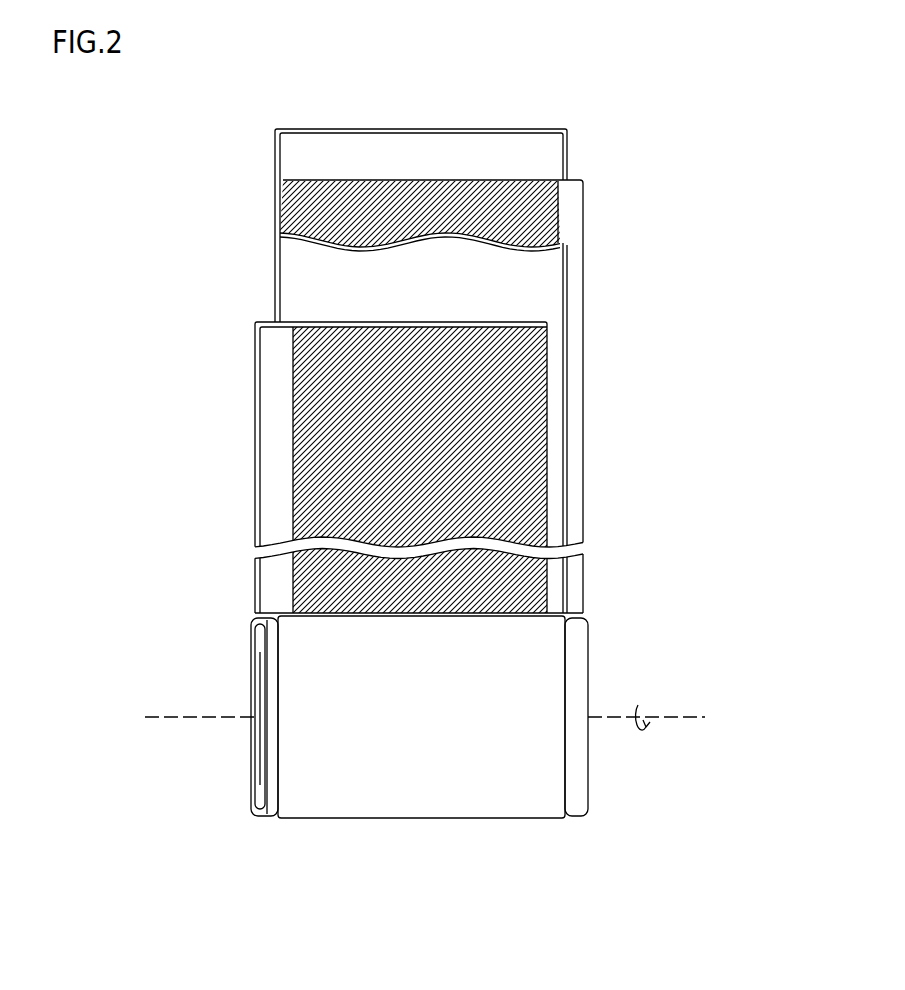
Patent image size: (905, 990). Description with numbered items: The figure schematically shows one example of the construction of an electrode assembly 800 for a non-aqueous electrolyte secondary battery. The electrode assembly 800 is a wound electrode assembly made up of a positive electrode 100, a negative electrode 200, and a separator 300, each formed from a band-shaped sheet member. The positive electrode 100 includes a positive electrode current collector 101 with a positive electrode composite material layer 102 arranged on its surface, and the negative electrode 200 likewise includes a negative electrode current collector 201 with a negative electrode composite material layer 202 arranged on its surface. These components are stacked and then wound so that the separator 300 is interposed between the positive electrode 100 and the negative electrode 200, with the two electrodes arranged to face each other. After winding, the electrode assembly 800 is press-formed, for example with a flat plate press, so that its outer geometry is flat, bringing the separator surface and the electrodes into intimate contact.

The positive electrode 100 is at (347, 467).
The positive electrode current collector 101 is at (265, 428).
The positive electrode composite material layer 102 is at (318, 378).
The negative electrode 200 is at (507, 396).
The negative electrode current collector 201 is at (573, 238).
The negative electrode composite material layer 202 is at (525, 187).
The separator 300 is at (524, 141).
The electrode assembly 800 is at (628, 851).